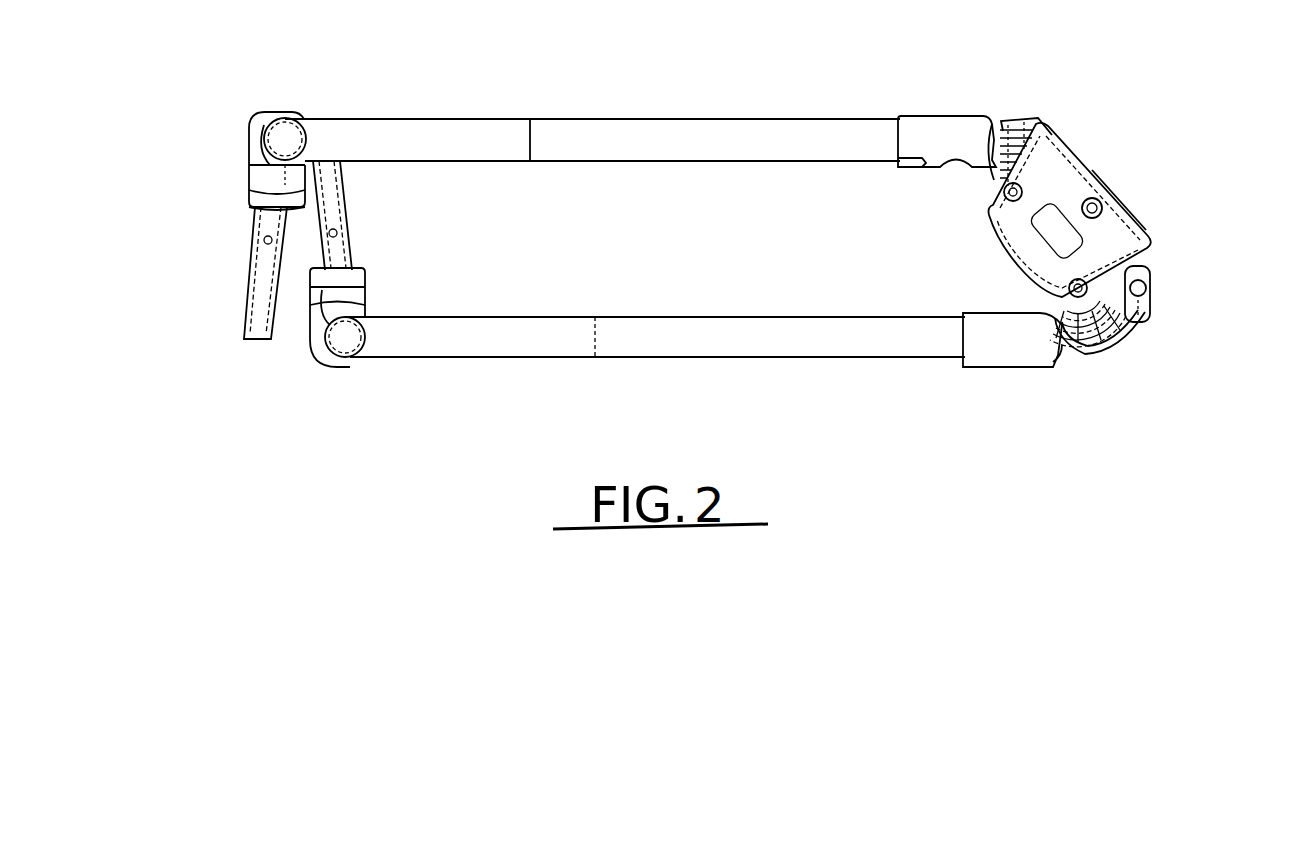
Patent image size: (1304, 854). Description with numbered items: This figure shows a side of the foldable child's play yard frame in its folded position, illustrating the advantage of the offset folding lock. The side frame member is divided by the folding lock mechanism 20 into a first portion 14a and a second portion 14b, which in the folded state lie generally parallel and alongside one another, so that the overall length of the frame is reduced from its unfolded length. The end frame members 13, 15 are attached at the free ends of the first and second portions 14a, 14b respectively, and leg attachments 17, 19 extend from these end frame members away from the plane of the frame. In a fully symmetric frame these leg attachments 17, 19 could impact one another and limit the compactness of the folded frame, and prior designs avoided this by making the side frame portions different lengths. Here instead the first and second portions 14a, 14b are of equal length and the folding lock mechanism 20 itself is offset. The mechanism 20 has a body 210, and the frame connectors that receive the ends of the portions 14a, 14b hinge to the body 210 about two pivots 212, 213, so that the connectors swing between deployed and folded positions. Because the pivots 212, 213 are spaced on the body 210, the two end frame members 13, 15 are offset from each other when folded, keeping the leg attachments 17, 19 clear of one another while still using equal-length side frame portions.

The end frame member 13 is at (248, 150).
The first portion of side frame member 14a is at (470, 117).
The second portion of side frame member 14b is at (655, 316).
The end frame member 15 is at (373, 301).
The leg attachment 17 is at (249, 262).
The leg attachment 19 is at (347, 229).
The folding lock mechanism 20 is at (1090, 207).
The body 210 is at (1148, 209).
The pivot 212 is at (1068, 290).
The pivot 213 is at (1003, 194).